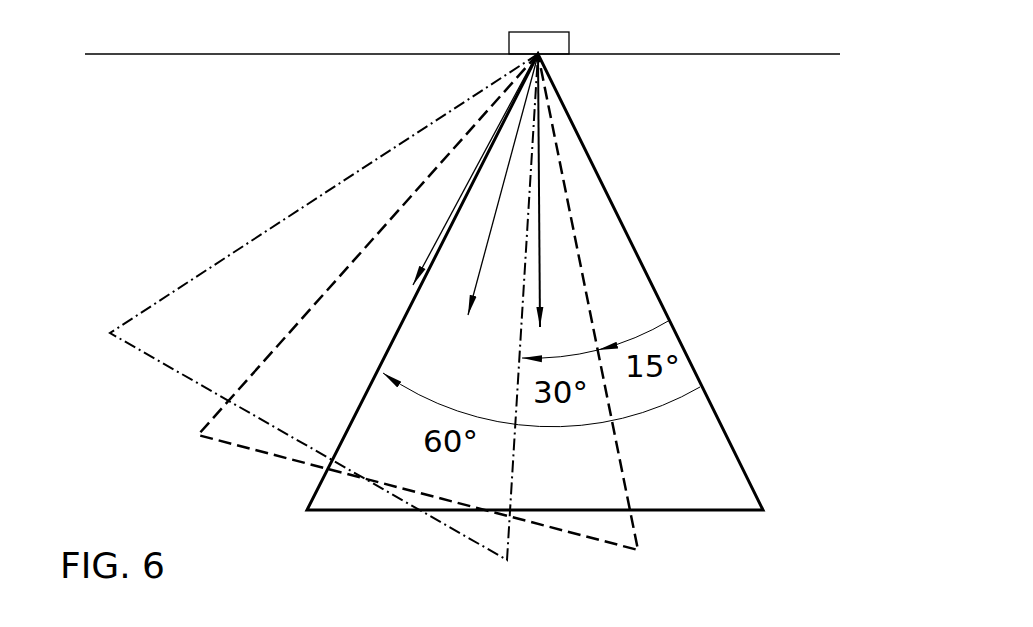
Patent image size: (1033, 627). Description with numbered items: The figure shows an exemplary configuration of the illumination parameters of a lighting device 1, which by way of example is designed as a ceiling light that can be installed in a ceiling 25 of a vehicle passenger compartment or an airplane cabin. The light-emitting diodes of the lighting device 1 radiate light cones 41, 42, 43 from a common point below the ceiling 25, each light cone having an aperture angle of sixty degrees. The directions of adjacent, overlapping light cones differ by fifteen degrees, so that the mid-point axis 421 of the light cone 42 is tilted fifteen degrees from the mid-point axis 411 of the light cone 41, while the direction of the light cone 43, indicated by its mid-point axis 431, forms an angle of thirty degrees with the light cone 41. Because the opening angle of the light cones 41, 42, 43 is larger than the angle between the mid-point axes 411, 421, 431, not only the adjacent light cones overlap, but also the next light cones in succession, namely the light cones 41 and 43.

The lighting device 1 is at (573, 40).
The ceiling 25 is at (363, 54).
The light cone 41 is at (597, 165).
The mid-point axis 411 is at (540, 277).
The light cone 42 is at (573, 232).
The mid-point axis 421 is at (513, 145).
The light cone 43 is at (537, 124).
The mid-point axis 431 is at (447, 225).